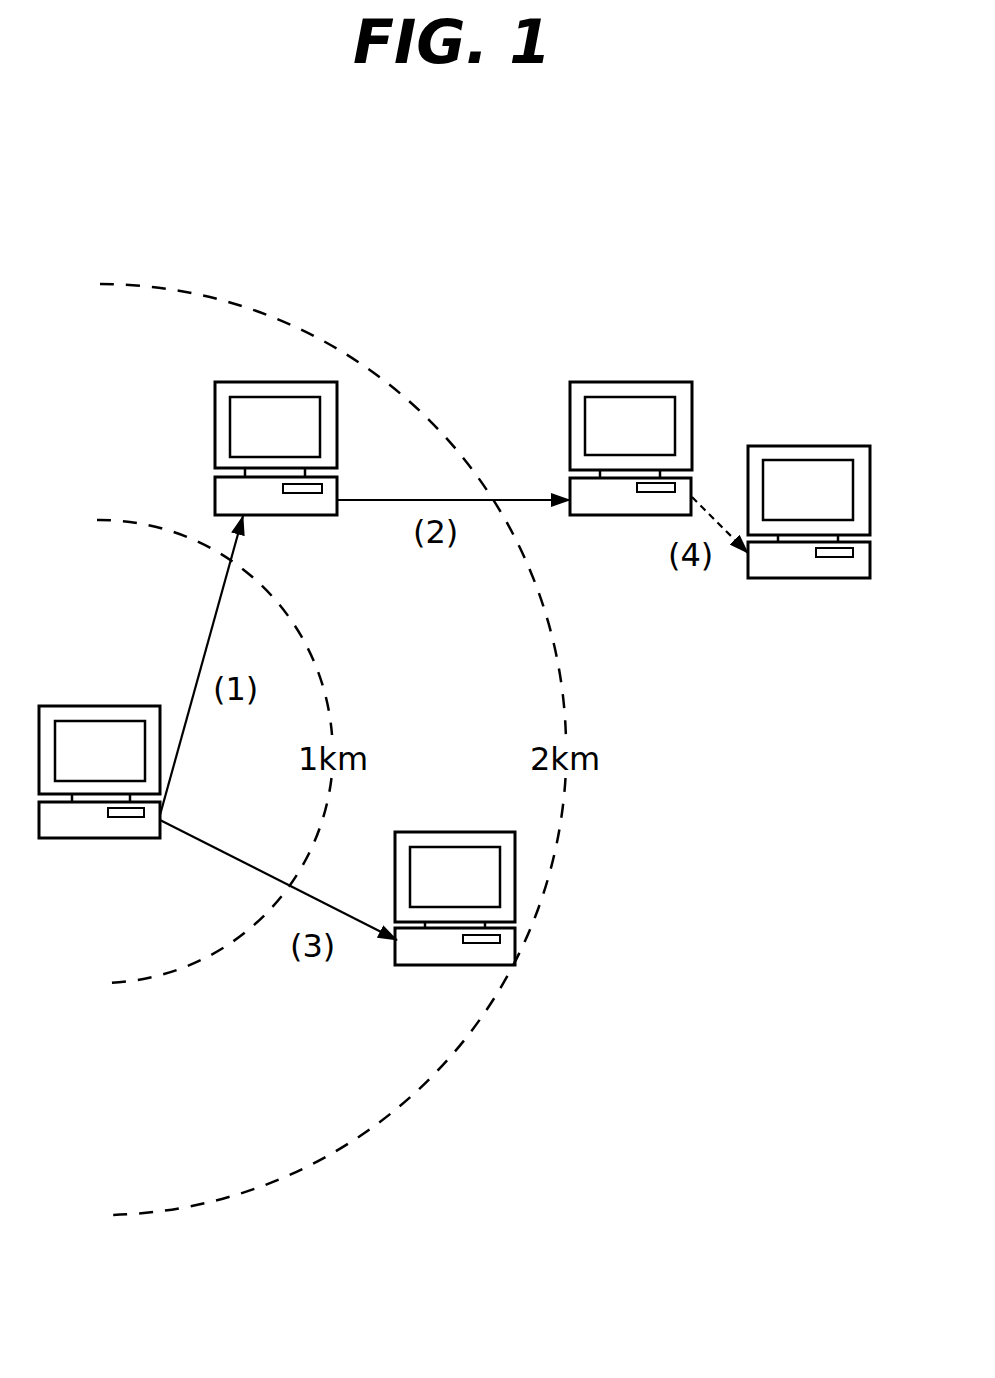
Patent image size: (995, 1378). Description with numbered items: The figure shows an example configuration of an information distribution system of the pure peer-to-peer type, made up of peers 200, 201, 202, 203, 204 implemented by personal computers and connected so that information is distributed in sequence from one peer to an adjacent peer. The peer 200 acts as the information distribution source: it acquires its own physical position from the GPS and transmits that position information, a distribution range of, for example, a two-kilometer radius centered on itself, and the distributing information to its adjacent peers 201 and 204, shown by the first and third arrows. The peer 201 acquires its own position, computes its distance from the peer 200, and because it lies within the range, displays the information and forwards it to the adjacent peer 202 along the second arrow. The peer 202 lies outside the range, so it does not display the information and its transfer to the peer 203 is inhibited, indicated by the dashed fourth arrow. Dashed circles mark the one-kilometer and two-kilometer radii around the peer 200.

The peer 200 is at (98, 706).
The peer 201 is at (215, 425).
The peer 202 is at (628, 382).
The peer 203 is at (808, 446).
The peer 204 is at (425, 832).